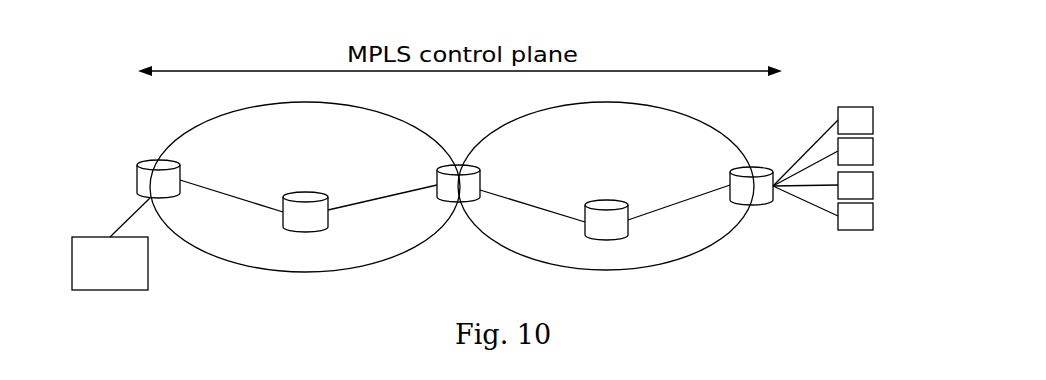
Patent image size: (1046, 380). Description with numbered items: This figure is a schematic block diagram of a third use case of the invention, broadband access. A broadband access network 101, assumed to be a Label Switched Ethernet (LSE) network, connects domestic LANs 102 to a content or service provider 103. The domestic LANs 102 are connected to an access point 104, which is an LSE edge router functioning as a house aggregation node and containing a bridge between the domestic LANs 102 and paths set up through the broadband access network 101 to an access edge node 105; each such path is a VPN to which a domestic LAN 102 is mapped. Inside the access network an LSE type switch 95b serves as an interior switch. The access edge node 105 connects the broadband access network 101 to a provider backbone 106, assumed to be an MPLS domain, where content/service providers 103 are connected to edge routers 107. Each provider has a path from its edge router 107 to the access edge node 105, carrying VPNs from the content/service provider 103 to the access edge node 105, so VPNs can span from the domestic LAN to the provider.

The broadband access network 101 is at (710, 250).
The domestic LAN 102 is at (840, 107).
The content/service provider 103 is at (148, 253).
The access point 104 is at (762, 205).
The access edge node 105 is at (446, 164).
The provider backbone 106 is at (383, 260).
The edge router 107 is at (137, 187).
The LSE type switch 95b is at (612, 200).